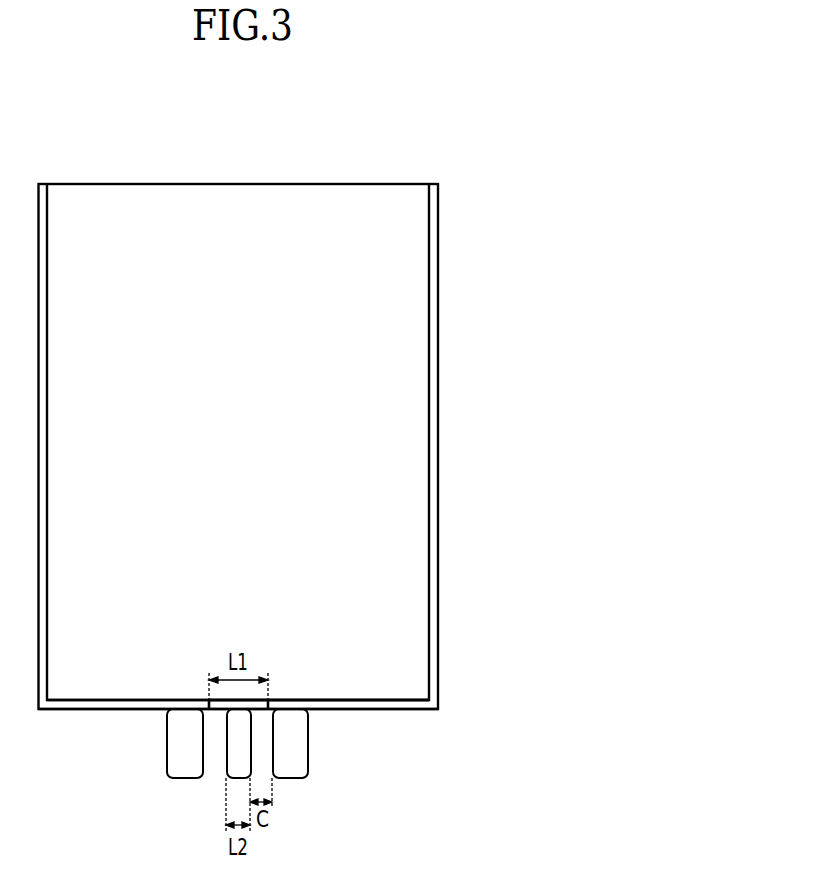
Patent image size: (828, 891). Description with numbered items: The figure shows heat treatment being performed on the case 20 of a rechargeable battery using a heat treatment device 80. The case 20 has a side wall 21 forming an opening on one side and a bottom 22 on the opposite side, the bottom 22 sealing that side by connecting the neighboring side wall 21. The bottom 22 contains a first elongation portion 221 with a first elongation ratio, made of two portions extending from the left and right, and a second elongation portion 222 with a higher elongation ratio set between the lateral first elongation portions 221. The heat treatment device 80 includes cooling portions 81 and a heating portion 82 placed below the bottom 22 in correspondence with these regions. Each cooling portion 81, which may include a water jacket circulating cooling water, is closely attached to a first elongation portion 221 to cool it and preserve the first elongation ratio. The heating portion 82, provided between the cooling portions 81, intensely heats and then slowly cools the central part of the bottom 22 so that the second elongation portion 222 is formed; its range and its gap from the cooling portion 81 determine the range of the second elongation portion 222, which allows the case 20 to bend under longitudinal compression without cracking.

The case 20 is at (375, 165).
The side wall 21 is at (430, 512).
The bottom 22 is at (239, 745).
The first elongation portion 221 is at (393, 705).
The second elongation portion 222 is at (255, 705).
The heat treatment device 80 is at (229, 800).
The cooling portion 81 is at (182, 767).
The heating portion 82 is at (233, 762).